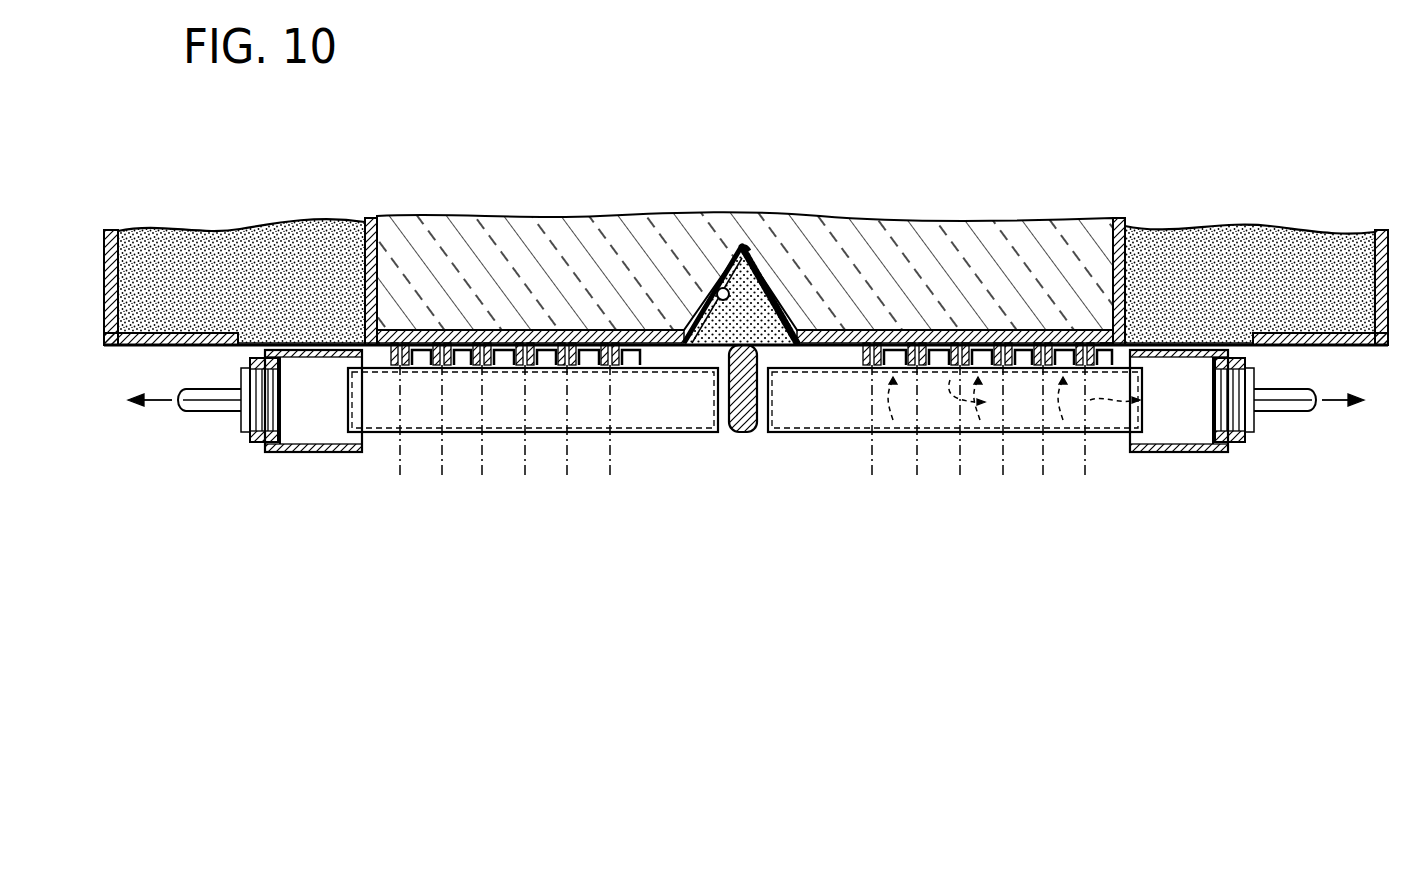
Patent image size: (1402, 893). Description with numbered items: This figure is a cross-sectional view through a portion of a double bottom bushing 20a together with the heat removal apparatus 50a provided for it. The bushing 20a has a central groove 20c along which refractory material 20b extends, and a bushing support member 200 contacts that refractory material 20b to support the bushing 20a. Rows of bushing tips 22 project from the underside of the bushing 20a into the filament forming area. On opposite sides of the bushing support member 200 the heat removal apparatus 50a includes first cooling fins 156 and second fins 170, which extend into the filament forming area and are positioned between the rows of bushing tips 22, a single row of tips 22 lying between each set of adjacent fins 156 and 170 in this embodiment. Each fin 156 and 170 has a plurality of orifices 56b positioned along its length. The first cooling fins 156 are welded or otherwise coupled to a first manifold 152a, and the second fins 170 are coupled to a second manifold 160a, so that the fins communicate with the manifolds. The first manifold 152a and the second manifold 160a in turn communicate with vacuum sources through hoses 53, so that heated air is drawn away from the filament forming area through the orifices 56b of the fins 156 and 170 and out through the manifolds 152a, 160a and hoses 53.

The double bottom bushing 20a is at (1110, 268).
The refractory material 20b is at (760, 285).
The central groove 20c is at (722, 297).
The bushing tips 22 is at (583, 345).
The hoses 53 is at (207, 411).
The orifices 56b is at (543, 373).
The first manifold 152a is at (312, 452).
The first cooling fins 156 is at (673, 410).
The second manifold 160a is at (1180, 452).
The second fins 170 is at (822, 415).
The bushing support member 200 is at (742, 425).
The heat removal apparatus 50a is at (1027, 494).